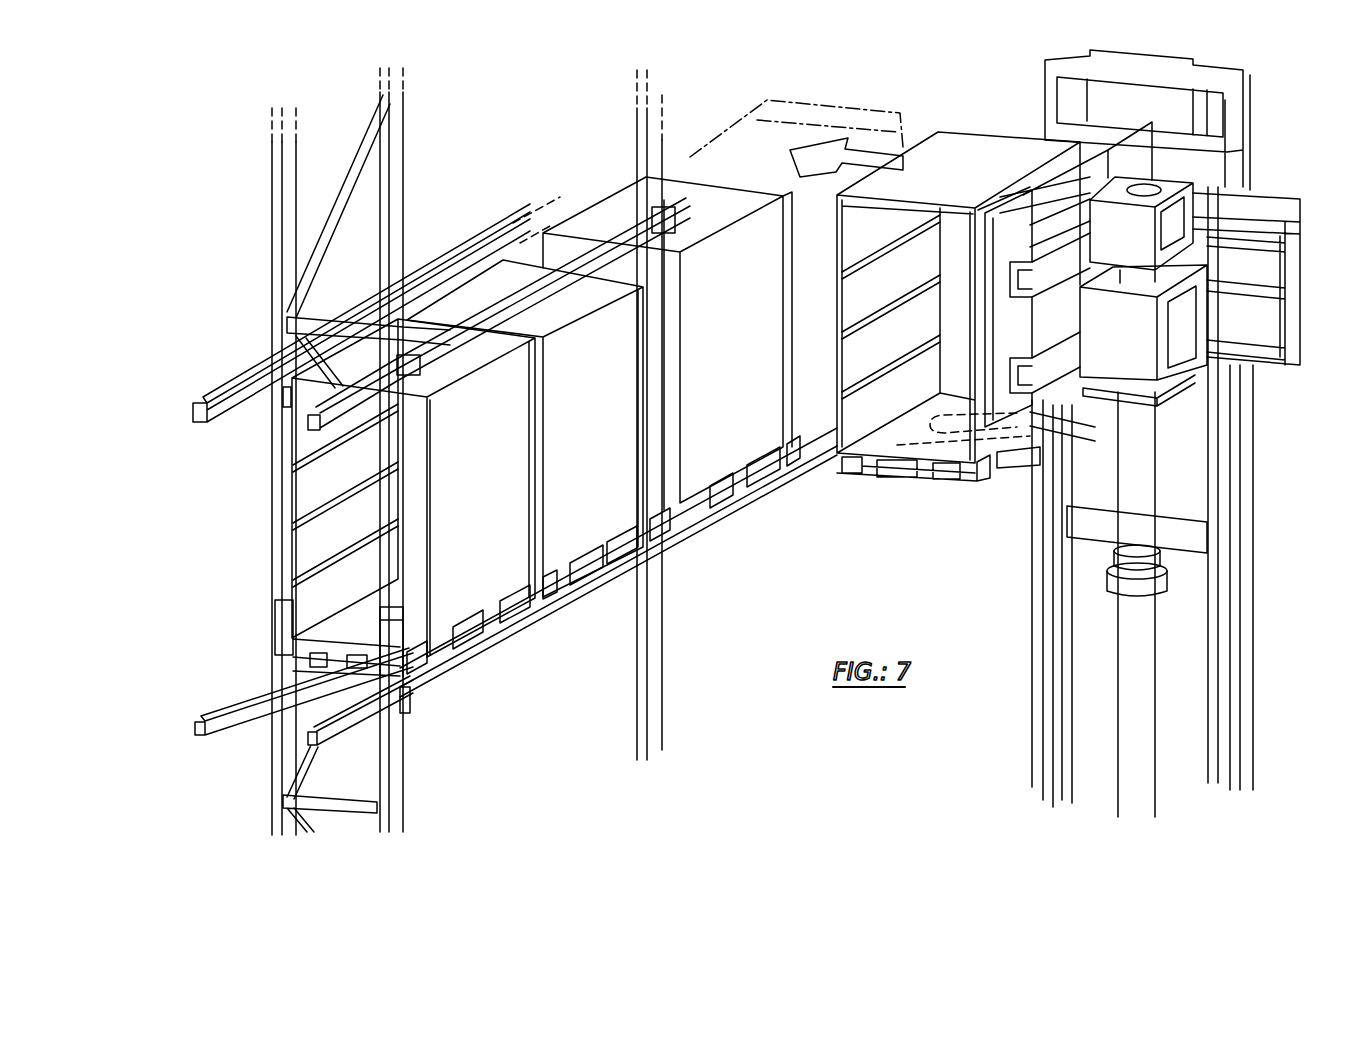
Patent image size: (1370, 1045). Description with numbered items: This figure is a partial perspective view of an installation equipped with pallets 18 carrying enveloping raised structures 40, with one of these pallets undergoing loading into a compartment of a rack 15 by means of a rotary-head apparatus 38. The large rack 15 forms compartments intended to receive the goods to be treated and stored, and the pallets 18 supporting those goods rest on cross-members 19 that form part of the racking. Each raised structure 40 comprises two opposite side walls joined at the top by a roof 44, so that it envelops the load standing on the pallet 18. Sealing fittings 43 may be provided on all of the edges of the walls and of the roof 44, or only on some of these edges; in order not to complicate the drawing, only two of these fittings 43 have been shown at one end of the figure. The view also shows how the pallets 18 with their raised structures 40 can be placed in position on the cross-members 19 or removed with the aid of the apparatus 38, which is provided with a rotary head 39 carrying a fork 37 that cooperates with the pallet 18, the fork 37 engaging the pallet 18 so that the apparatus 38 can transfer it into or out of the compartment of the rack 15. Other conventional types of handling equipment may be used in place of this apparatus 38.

The rack 15 is at (393, 740).
The pallet 18 is at (743, 497).
The cross-member 19 is at (448, 663).
The fork 37 is at (1013, 458).
The apparatus 38 is at (1140, 489).
The rotary head 39 is at (1190, 310).
The raised structure 40 is at (602, 203).
The sealing fitting 43 is at (905, 150).
The roof 44 is at (987, 150).